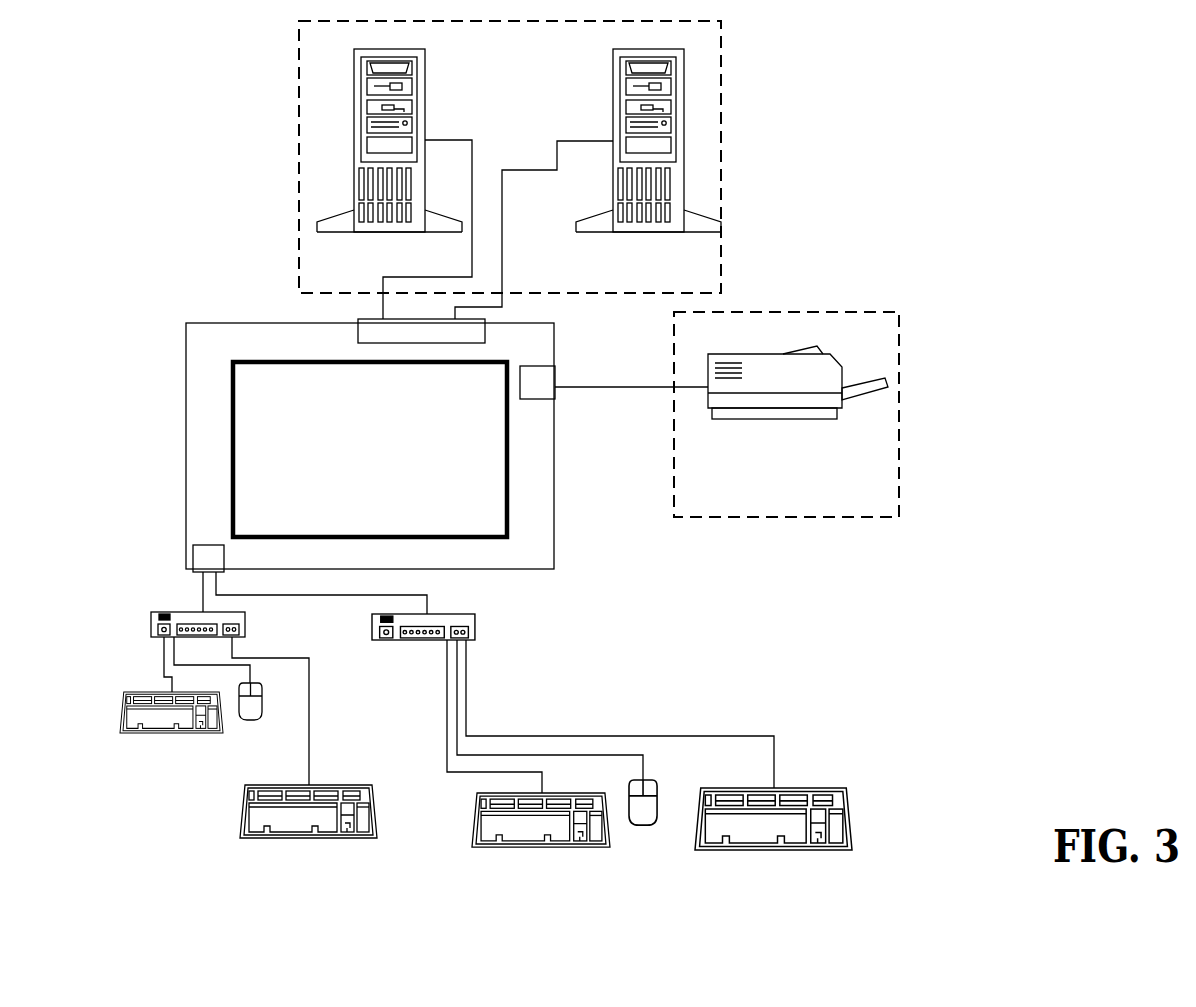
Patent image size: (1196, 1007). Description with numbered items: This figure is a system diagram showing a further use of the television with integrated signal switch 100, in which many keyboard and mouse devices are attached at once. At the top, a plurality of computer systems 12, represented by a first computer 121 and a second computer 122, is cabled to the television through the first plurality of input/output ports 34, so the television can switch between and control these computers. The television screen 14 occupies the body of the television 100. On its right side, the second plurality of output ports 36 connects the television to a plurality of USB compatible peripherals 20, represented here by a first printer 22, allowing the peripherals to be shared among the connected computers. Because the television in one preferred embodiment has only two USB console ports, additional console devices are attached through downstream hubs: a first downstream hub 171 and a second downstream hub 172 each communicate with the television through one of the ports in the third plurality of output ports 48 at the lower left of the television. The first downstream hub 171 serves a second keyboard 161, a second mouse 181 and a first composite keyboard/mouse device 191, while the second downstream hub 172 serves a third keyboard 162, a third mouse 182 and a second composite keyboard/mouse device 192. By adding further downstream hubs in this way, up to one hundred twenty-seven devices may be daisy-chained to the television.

The plurality of computer systems 12 is at (510, 157).
The first computer 121 is at (406, 260).
The second computer 122 is at (666, 260).
The television with integrated signal switch 100 is at (239, 355).
The first plurality of input/output ports 34 is at (416, 342).
The television screen 14 is at (295, 514).
The second plurality of output ports 36 is at (548, 392).
The third plurality of output ports 48 is at (219, 569).
The plurality of USB compatible peripherals 20 is at (786, 414).
The first printer 22 is at (786, 449).
The first downstream hub 171 is at (214, 663).
The second downstream hub 172 is at (441, 667).
The second keyboard 161 is at (186, 765).
The third keyboard 162 is at (557, 877).
The second mouse 181 is at (267, 749).
The third mouse 182 is at (662, 858).
The first composite keyboard/mouse device 191 is at (326, 869).
The second composite keyboard/mouse device 192 is at (791, 877).